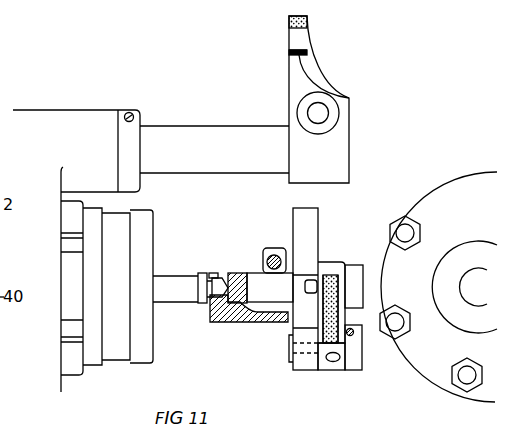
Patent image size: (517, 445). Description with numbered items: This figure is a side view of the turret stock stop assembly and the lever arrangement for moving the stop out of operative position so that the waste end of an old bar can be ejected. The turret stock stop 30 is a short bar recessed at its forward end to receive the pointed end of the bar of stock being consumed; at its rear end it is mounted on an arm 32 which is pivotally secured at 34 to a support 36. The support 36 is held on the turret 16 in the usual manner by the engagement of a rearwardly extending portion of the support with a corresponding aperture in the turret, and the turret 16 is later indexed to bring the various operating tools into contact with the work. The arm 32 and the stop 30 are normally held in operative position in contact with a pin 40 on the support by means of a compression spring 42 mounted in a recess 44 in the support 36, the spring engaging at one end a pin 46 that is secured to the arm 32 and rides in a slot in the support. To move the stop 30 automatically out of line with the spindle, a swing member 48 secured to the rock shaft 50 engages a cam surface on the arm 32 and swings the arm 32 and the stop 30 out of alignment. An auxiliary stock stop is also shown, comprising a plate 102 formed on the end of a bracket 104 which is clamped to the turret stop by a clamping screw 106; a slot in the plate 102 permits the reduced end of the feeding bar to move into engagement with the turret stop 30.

The turret 16 is at (467, 187).
The turret stock stop 30 is at (258, 280).
The arm 32 is at (317, 222).
The pivot 34 is at (288, 350).
The support 36 is at (323, 267).
The pin 40 is at (313, 285).
The compression spring 42 is at (363, 312).
The recess 44 is at (333, 360).
The pin 46 is at (310, 352).
The swing member 48 is at (305, 45).
The rock shaft 50 is at (178, 138).
The plate 102 is at (213, 272).
The bracket 104 is at (217, 323).
The clamping screw 106 is at (275, 255).